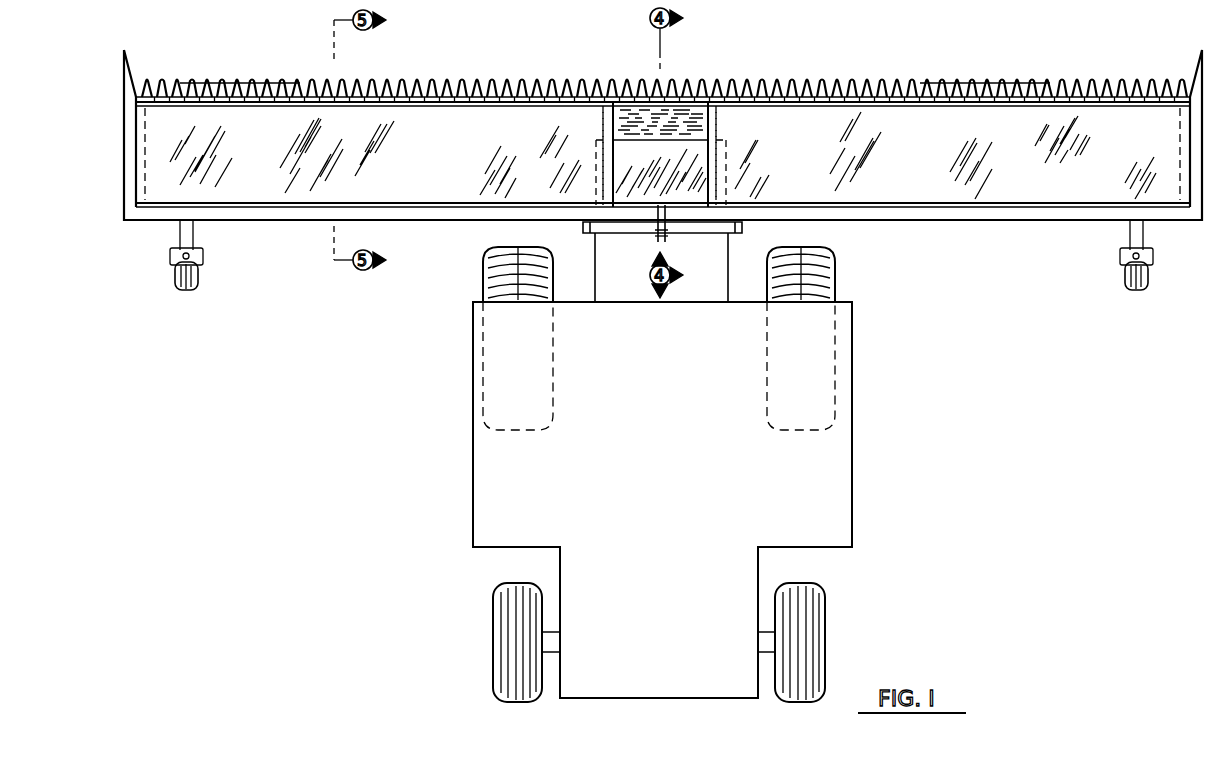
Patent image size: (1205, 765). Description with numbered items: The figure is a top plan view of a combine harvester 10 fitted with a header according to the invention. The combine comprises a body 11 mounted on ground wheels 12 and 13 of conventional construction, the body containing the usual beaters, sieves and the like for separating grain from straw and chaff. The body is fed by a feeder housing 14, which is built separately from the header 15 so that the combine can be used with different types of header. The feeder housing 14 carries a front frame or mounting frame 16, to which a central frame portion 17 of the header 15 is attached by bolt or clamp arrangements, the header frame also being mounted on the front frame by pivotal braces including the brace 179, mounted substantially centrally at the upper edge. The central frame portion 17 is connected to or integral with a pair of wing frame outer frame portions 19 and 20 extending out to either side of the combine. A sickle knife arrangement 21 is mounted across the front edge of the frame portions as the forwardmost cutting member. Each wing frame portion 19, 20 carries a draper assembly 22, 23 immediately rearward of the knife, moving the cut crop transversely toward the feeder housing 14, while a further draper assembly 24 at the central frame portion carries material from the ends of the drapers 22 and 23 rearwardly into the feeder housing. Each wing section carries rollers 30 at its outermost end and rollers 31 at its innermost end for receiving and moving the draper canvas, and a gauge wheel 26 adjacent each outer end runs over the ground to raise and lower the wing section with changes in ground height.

The combine harvester 10 is at (886, 418).
The body 11 is at (830, 478).
The ground wheels 12 is at (826, 292).
The ground wheels 13 is at (818, 622).
The feeder housing 14 is at (692, 288).
The header 15 is at (932, 233).
The front frame or mounting frame 16 is at (591, 233).
The central frame portion 17 is at (647, 210).
The pivotal brace 179 is at (655, 238).
The wing frame outer frame portion 19 is at (466, 72).
The wing frame outer frame portion 20 is at (982, 76).
The sickle knife arrangement 21 is at (238, 78).
The draper assembly 22 is at (321, 136).
The draper assembly 23 is at (1010, 137).
The further draper assembly 24 is at (646, 166).
The gauge wheel 26 is at (196, 280).
The roller 30 is at (148, 165).
The roller 31 is at (610, 118).